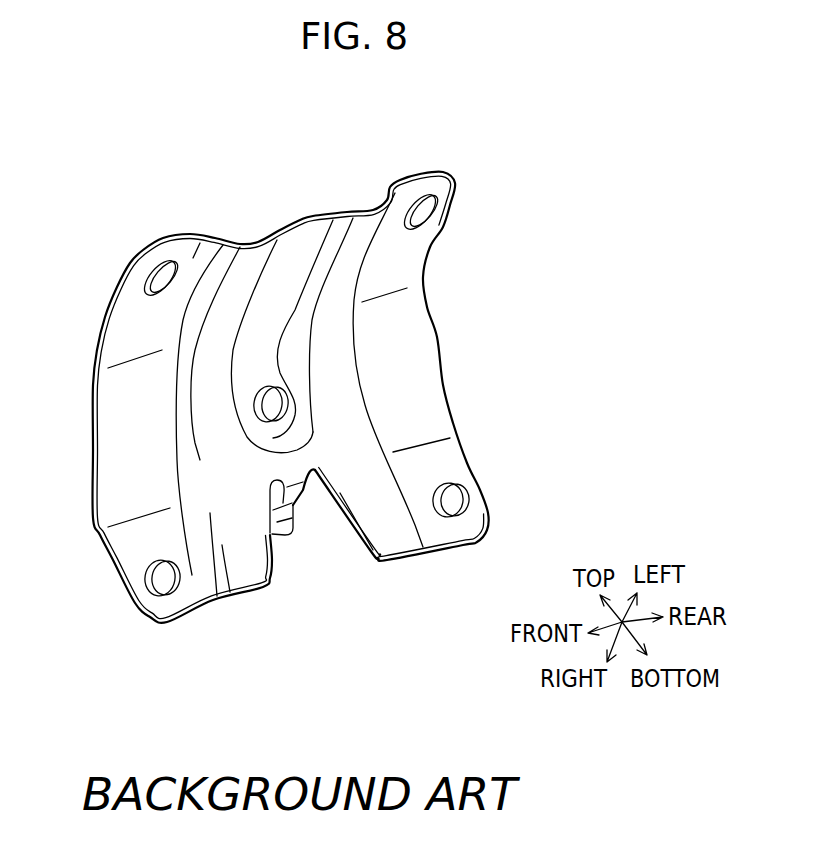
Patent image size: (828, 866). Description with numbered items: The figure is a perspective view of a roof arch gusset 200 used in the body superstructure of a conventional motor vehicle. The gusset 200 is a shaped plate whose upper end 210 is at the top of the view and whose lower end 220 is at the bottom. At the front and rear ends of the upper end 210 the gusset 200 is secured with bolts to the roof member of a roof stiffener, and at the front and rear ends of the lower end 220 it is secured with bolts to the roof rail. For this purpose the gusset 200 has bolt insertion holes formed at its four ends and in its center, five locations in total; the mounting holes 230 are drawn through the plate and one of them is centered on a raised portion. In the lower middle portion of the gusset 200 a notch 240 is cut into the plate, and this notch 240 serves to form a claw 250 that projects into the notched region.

The gusset 200 is at (93, 580).
The upper end 210 is at (198, 233).
The lower end 220 is at (193, 593).
The mounting holes 230 is at (265, 420).
The notch 240 is at (370, 543).
The claw 250 is at (283, 530).